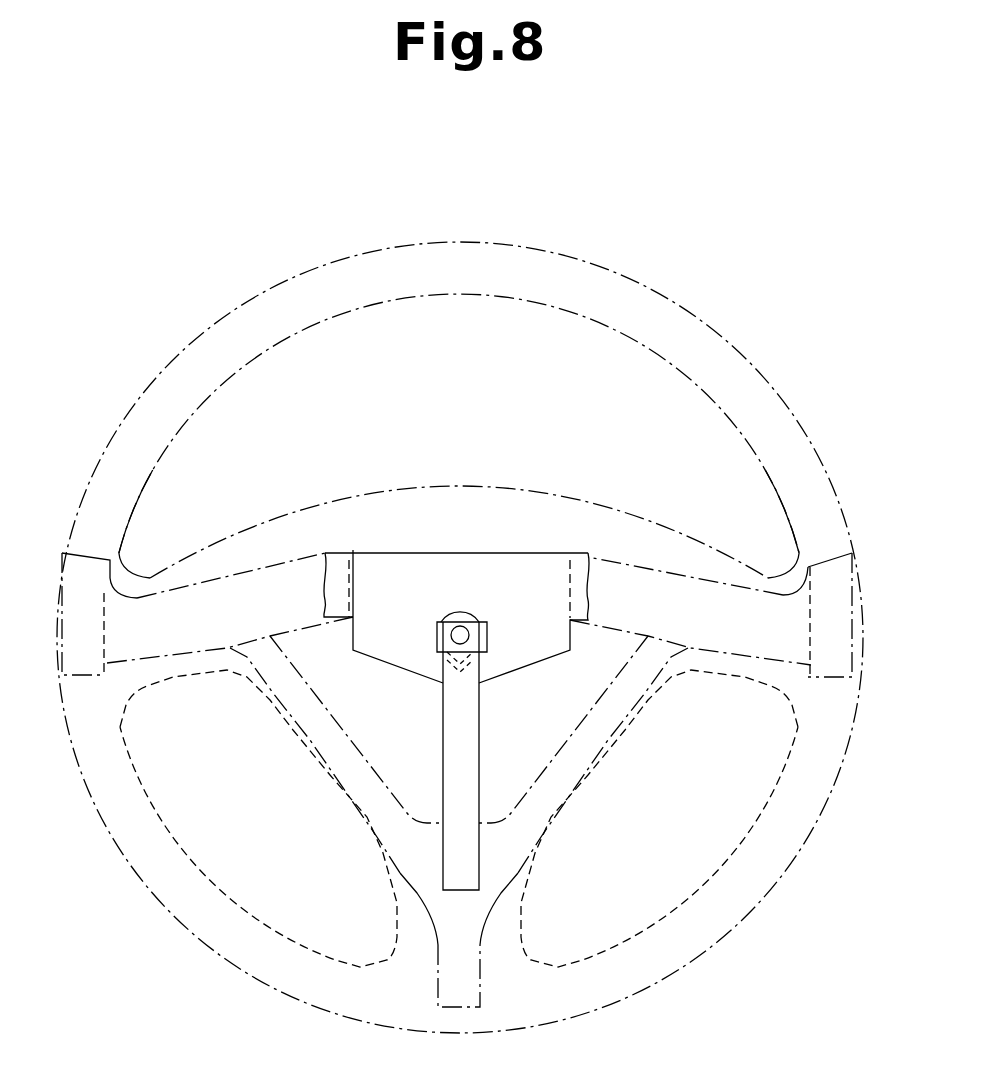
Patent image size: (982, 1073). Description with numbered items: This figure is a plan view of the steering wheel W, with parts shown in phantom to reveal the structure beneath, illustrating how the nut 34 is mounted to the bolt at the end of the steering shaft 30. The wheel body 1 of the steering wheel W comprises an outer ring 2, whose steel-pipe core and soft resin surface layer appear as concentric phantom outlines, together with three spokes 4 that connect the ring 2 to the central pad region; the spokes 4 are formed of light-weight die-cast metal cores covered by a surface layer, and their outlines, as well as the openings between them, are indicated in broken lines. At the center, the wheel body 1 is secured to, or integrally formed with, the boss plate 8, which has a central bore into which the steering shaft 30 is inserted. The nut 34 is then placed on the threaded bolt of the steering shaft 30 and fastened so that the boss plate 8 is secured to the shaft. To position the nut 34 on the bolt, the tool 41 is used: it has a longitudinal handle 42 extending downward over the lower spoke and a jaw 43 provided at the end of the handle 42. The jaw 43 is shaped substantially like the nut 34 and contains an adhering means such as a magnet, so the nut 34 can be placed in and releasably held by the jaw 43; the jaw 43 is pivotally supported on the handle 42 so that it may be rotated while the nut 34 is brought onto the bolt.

The steering wheel W is at (718, 270).
The wheel body 1 is at (733, 339).
The ring 2 is at (508, 264).
The spokes 4 is at (173, 677).
The boss plate 8 is at (470, 551).
The steering shaft 30 is at (470, 613).
The nut 34 is at (458, 612).
The tool 41 is at (434, 721).
The handle 42 is at (481, 742).
The jaw 43 is at (488, 636).